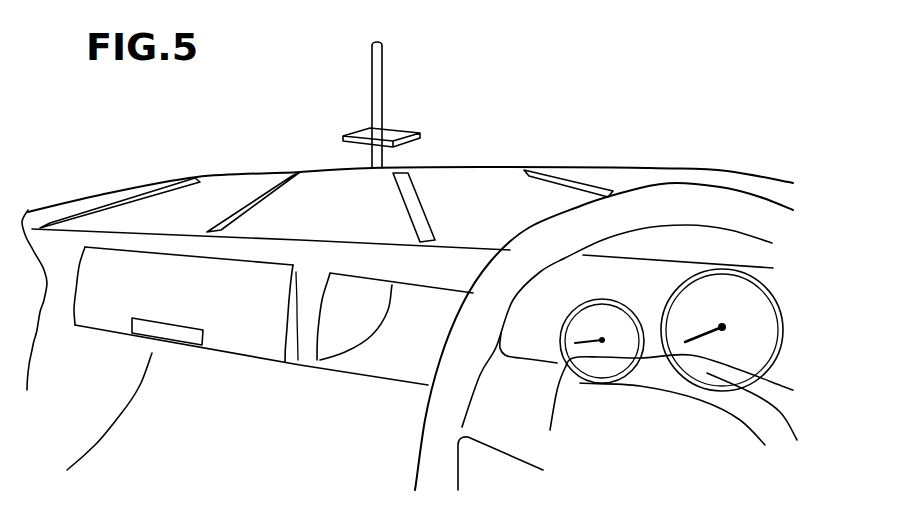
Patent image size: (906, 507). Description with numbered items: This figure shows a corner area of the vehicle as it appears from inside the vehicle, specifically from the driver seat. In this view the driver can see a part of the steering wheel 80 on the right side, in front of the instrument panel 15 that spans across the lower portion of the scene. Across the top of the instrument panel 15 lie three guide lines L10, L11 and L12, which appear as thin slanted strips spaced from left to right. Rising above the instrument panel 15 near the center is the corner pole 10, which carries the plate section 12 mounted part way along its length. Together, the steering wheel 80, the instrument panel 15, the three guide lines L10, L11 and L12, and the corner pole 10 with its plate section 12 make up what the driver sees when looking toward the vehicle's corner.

The corner pole 10 is at (372, 87).
The plate section 12 is at (392, 136).
The instrument panel 15 is at (470, 212).
The steering wheel 80 is at (678, 203).
The guide line L10 is at (576, 182).
The guide line L11 is at (415, 203).
The guide line L12 is at (253, 192).